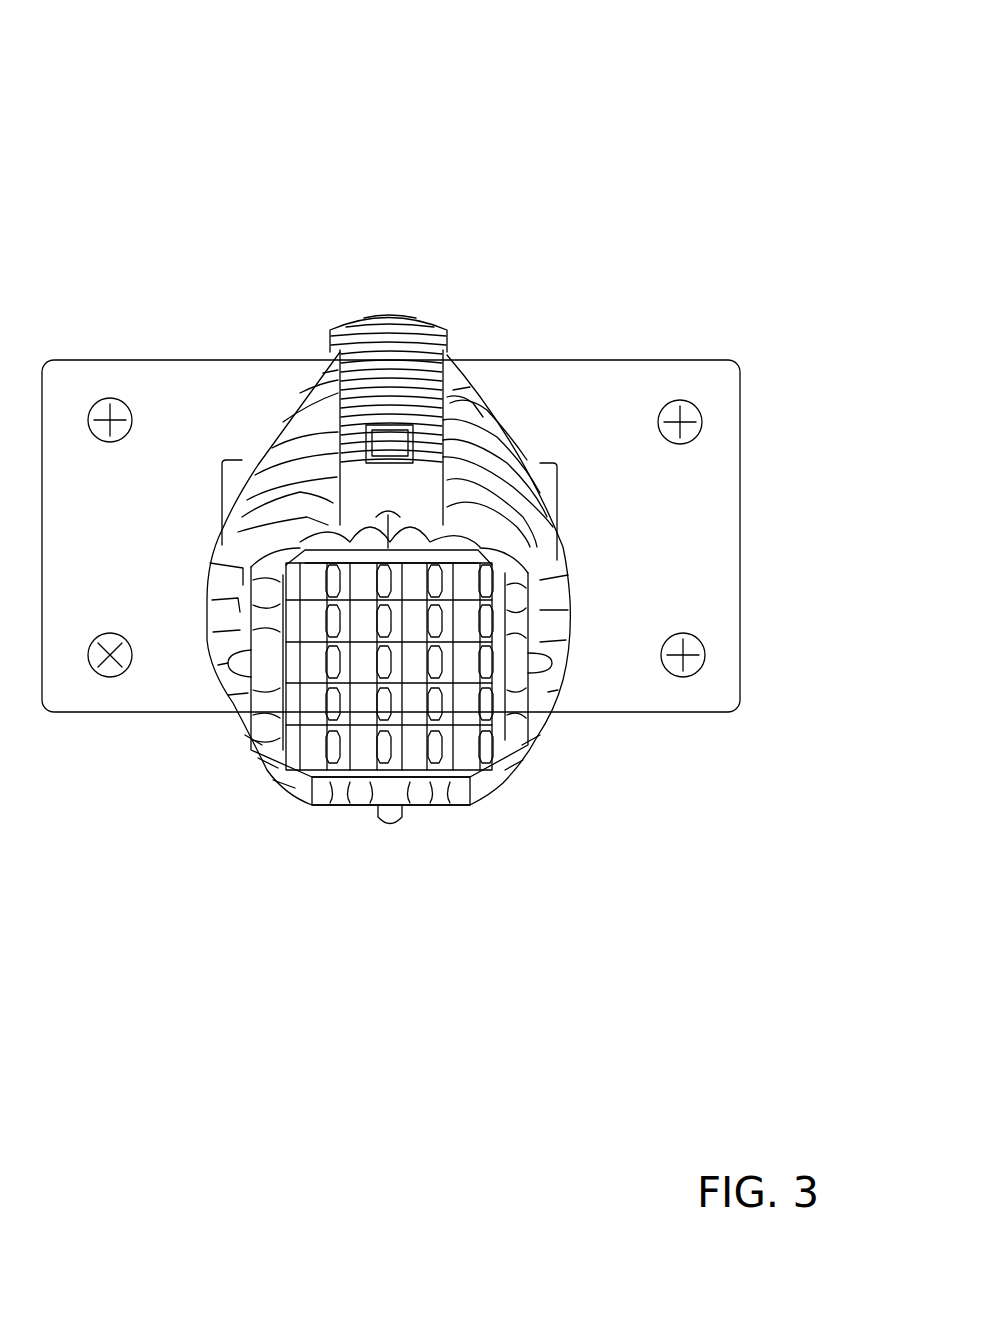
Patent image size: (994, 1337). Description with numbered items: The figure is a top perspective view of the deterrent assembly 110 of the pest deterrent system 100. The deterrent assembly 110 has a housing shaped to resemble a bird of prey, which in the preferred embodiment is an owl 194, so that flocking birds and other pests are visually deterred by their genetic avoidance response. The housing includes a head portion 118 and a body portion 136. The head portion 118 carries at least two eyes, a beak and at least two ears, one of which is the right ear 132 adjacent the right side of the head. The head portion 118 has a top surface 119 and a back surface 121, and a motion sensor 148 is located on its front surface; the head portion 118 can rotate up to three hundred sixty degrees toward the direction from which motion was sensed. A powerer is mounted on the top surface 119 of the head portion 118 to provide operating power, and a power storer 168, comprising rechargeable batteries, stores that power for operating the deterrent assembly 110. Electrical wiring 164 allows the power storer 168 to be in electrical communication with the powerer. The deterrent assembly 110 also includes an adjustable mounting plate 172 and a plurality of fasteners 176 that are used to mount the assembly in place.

The pest deterrent system 100 is at (441, 439).
The deterrent assembly 110 is at (479, 461).
The head portion 118 is at (247, 705).
The top surface 119 is at (277, 767).
The back surface 121 is at (460, 576).
The right ear 132 is at (407, 711).
The body portion 136 is at (568, 563).
The motion sensor 148 is at (420, 437).
The electrical wiring 164 is at (423, 752).
The power storer 168 is at (467, 748).
The adjustable mounting plate 172 is at (441, 570).
The fasteners 176 is at (707, 647).
The owl 194 is at (478, 375).